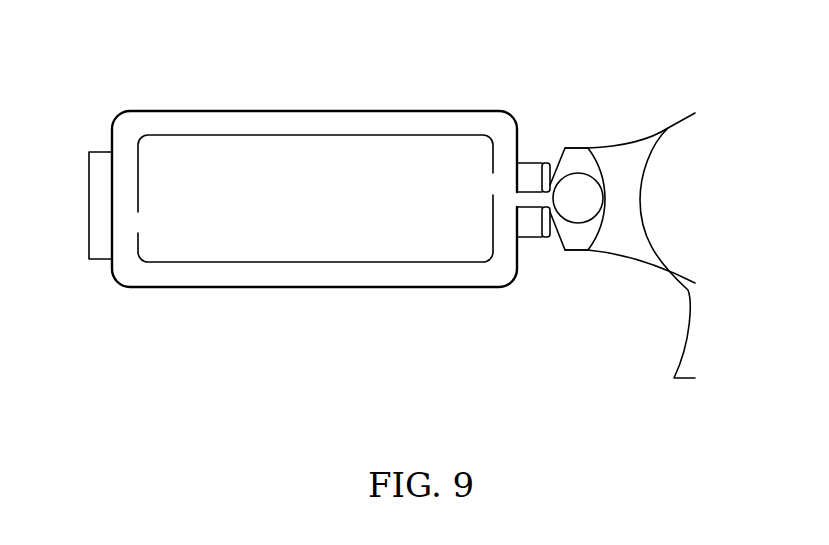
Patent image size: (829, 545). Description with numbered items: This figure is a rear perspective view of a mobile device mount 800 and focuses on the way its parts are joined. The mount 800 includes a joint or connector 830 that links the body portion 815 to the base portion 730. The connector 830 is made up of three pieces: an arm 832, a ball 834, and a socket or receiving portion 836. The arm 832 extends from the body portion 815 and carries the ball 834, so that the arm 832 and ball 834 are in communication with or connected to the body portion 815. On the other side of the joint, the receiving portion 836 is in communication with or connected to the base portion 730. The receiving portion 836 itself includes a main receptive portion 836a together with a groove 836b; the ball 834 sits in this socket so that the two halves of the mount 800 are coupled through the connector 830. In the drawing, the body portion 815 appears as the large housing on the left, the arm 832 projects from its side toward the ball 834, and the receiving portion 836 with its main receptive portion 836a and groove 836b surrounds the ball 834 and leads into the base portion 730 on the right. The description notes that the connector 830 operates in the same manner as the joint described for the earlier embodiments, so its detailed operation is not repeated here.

The mount 800 is at (303, 217).
The body portion 815 is at (181, 86).
The connector 830 is at (692, 79).
The arm 832 is at (528, 194).
The ball 834 is at (600, 202).
The receiving portion 836 is at (580, 158).
The main receptive portion 836a is at (596, 181).
The groove 836b is at (553, 227).
The base portion 730 is at (671, 405).